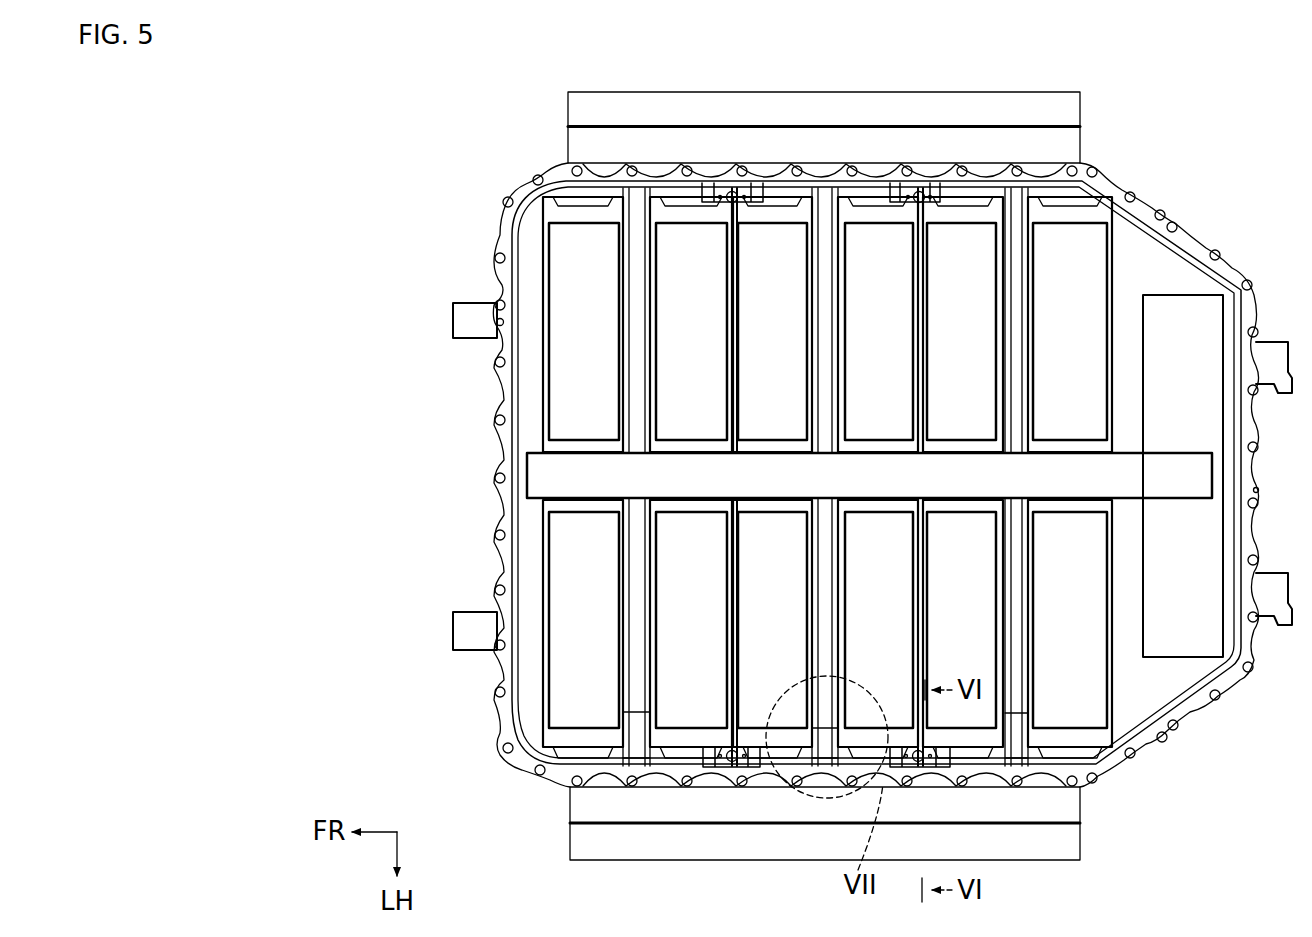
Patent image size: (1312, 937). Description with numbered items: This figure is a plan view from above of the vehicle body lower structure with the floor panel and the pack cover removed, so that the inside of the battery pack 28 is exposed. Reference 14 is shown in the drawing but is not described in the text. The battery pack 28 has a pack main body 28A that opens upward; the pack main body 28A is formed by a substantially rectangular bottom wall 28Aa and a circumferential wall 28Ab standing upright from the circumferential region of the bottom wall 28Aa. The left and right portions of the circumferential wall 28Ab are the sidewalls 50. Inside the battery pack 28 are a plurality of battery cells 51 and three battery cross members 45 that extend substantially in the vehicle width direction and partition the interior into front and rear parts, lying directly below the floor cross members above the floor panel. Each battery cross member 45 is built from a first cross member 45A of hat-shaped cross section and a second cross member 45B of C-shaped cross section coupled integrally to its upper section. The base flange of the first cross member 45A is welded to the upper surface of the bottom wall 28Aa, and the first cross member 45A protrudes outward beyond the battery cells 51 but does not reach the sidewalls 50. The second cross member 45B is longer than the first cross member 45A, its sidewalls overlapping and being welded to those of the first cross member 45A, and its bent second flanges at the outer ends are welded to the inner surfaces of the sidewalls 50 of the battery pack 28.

The cross member 14 is at (914, 84).
The battery pack 28 is at (872, 434).
The pack main body 28A is at (1132, 176).
The bottom wall 28Aa is at (528, 392).
The circumferential wall 28Ab is at (762, 556).
The battery cross member 45 is at (843, 386).
The first cross member 45A is at (616, 754).
The second cross member 45B is at (630, 712).
The sidewall 50 is at (696, 788).
The battery cell 51 is at (760, 255).